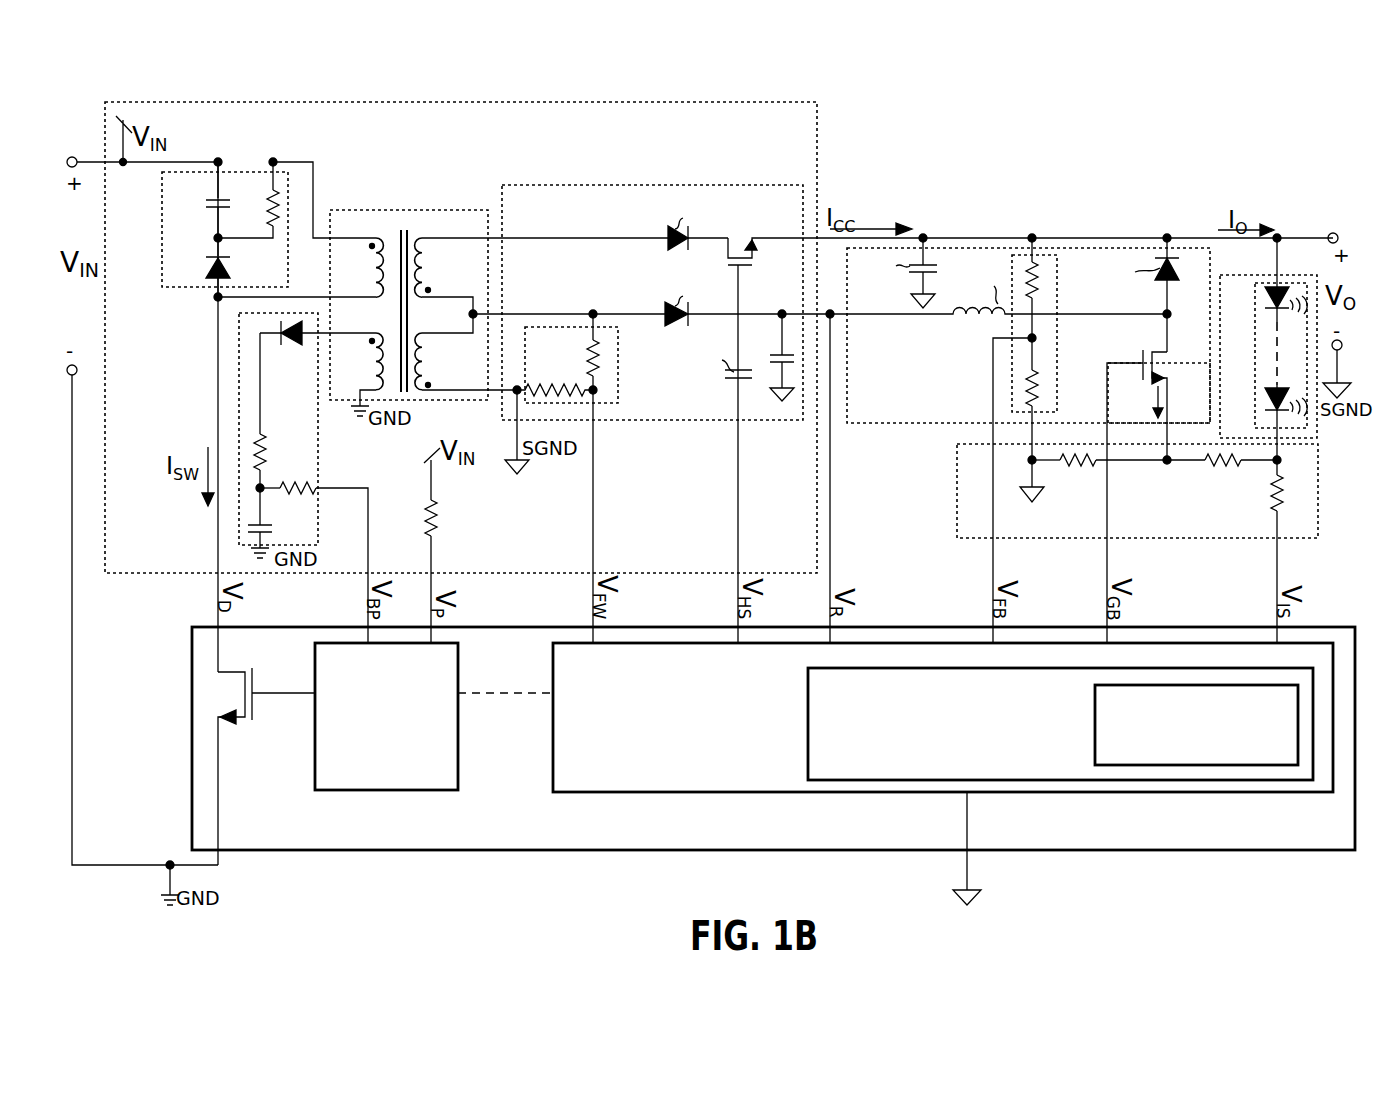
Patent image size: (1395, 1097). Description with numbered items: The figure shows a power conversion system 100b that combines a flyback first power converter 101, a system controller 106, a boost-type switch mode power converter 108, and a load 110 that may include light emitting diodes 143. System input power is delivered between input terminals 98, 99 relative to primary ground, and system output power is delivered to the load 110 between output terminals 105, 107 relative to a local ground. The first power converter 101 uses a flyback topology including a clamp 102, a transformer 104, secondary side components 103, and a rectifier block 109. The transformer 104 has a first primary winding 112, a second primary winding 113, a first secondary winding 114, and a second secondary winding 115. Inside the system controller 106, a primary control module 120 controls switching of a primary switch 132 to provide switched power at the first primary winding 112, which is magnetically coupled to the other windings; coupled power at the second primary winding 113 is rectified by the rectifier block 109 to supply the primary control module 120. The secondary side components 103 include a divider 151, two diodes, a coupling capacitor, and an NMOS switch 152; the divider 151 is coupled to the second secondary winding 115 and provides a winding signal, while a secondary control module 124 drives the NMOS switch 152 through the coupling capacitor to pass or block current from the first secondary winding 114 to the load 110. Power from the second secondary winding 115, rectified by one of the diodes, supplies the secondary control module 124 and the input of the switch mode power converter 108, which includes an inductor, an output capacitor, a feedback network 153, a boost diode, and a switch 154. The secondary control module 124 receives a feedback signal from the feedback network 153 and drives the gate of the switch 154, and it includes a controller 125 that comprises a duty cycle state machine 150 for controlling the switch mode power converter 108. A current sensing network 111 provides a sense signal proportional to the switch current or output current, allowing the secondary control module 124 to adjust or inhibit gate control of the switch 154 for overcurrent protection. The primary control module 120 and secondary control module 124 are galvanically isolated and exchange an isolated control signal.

The input terminal 98 is at (72, 156).
The input terminal 99 is at (76, 374).
The power conversion system 100b is at (1258, 106).
The first power converter 101 is at (462, 102).
The clamp 102 is at (162, 214).
The secondary side components 103 is at (630, 185).
The transformer 104 is at (423, 295).
The output terminal 105 is at (1335, 233).
The system controller 106 is at (192, 660).
The output terminal 107 is at (1343, 347).
The switch mode power converter 108 is at (897, 424).
The rectifier block 109 is at (318, 446).
The load 110 is at (1264, 276).
The current sensing network 111 is at (957, 488).
The first primary winding 112 is at (377, 284).
The second primary winding 113 is at (377, 380).
The first secondary winding 114 is at (428, 262).
The second secondary winding 115 is at (434, 357).
The primary control module 120 is at (346, 790).
The secondary control module 124 is at (746, 792).
The controller 125 is at (808, 692).
The primary switch 132 is at (240, 722).
The light emitting diodes 143 is at (1256, 326).
The duty cycle state machine 150 is at (1095, 718).
The divider 151 is at (618, 377).
The NMOS switch 152 is at (732, 243).
The feedback network 153 is at (1057, 335).
The switch 154 is at (1160, 359).